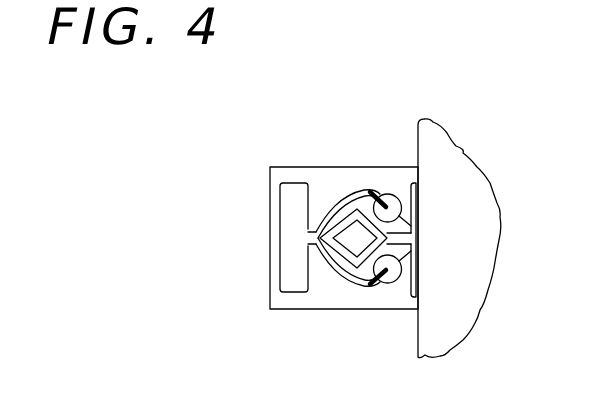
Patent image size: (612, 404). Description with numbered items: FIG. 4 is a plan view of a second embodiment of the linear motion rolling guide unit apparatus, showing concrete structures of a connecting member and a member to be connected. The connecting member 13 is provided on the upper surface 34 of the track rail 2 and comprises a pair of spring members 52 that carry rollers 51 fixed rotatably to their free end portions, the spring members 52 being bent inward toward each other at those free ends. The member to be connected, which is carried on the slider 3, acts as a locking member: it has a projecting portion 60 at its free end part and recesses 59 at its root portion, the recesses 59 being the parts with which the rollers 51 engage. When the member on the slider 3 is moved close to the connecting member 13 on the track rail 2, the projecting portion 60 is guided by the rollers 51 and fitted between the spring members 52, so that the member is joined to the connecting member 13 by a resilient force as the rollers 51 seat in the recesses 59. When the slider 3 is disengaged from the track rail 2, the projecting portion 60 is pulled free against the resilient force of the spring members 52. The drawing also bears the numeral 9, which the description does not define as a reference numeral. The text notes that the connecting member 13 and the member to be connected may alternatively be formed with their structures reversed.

The track rail 2 is at (292, 176).
The slider 3 is at (455, 202).
The connecting member 13 is at (283, 275).
The upper surface 34 is at (290, 302).
The spring members 52 is at (346, 190).
The rollers 51 is at (389, 194).
The island 9 is at (336, 258).
The projecting portion 60 is at (356, 208).
The recesses 59 is at (412, 182).